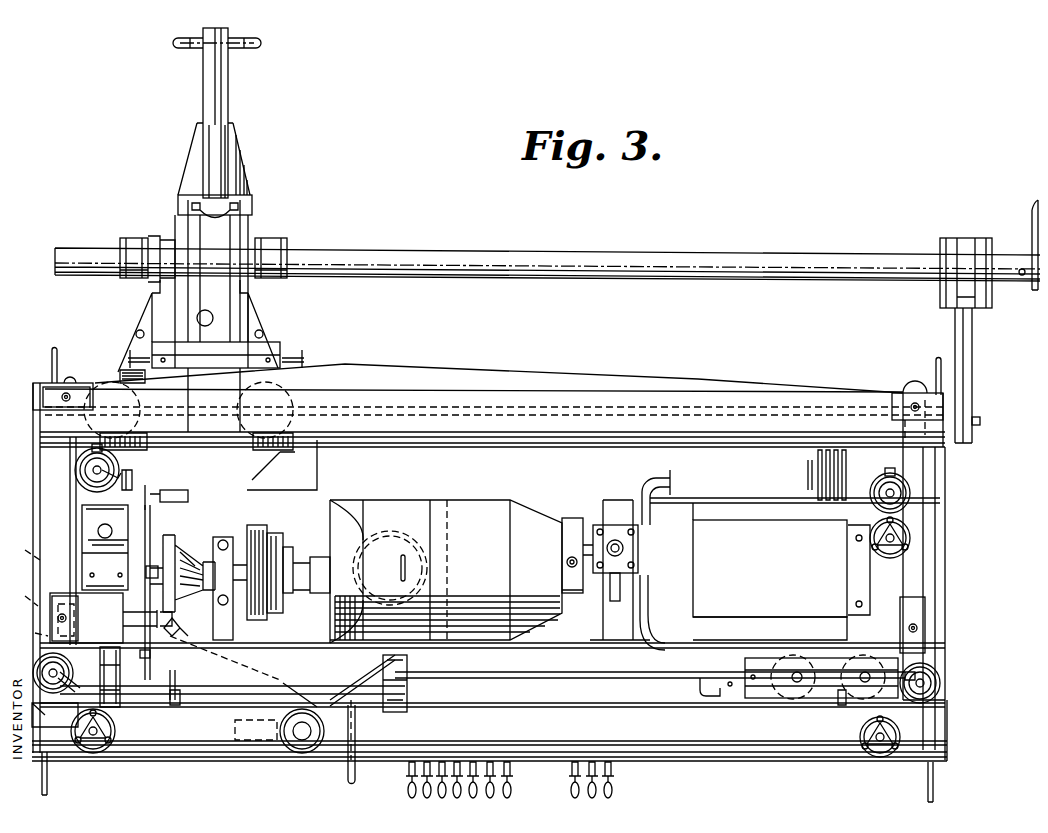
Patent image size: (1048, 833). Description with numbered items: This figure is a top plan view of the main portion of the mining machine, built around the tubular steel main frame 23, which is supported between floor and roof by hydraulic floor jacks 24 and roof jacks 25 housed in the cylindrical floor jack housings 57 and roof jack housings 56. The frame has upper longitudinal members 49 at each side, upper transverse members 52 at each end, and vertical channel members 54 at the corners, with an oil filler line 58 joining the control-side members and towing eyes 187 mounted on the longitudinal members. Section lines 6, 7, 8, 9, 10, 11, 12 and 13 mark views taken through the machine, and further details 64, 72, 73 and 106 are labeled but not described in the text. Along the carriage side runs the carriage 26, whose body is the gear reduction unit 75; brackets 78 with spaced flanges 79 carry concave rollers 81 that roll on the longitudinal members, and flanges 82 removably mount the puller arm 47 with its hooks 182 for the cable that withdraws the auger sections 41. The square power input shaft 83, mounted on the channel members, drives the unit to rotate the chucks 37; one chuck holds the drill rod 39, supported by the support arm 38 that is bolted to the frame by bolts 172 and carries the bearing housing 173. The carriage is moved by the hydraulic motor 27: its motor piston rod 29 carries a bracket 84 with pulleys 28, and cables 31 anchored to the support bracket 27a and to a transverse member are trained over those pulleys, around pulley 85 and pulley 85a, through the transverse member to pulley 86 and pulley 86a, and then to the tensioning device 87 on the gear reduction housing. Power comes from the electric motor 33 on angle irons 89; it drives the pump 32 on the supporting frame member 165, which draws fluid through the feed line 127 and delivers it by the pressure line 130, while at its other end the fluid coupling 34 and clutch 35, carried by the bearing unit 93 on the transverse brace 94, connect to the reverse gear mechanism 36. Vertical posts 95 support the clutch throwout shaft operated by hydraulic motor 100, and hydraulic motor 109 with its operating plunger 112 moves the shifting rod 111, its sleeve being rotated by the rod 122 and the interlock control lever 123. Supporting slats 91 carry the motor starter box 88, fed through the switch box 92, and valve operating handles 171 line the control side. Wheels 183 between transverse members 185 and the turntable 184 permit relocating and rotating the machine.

The section line 6- 6 is at (322, 270).
The section line 7- 7 is at (590, 800).
The section line 8- 8 is at (892, 440).
The section line 9- 9 is at (15, 455).
The view arrows 10 is at (900, 278).
The view arrow 11 is at (110, 510).
The view arrow 12 is at (120, 563).
The view arrow 13 is at (23, 615).
The tubular steel main frame 23 is at (952, 572).
The hydraulic floor jack 24 is at (75, 473).
The hydraulic roof jack 25 is at (90, 752).
The carriage 26 is at (267, 323).
The hydraulic motor 27 is at (220, 700).
The support bracket 27a is at (395, 712).
The pulleys 28 is at (855, 656).
The motor piston rod 29 is at (550, 678).
The cables 31 is at (716, 380).
The pump 32 is at (598, 585).
The electric motor 33 is at (476, 514).
The fluid coupling 34 is at (266, 532).
The clutch 35 is at (180, 640).
The reverse gear mechanism 36 is at (88, 556).
The chucks 37 is at (275, 240).
The support arm 38 is at (973, 379).
The drill rod 39 is at (612, 277).
The auger sections 41 is at (1032, 216).
The puller arm 47 is at (229, 118).
The upper longitudinal member 49 is at (704, 443).
The upper transverse member 52 is at (38, 644).
The vertical channel members 54 is at (960, 458).
The roof jack housings 56 is at (100, 752).
The floor jack housings 57 is at (75, 470).
The oil filler line 58 is at (307, 754).
The wheel bracket 64 is at (74, 464).
The wheel hub 72 is at (106, 726).
The wheel bolts 73 is at (80, 730).
The gear reduction unit 75 is at (246, 230).
The brackets 78 is at (278, 357).
The flanges 79 is at (328, 457).
The concave rollers 81 is at (122, 377).
The flanges 82 is at (213, 313).
The power input shaft 83 is at (436, 437).
The bracket 84 is at (758, 700).
The pulley 85 is at (27, 634).
The pulley 85a is at (935, 632).
The pulley 86 is at (58, 385).
The pulley 86a is at (925, 393).
The tensioning device 87 is at (216, 351).
The motor starter box 88 is at (780, 522).
The angle irons 89 is at (672, 508).
The supporting slats 91 is at (722, 497).
The switch box 92 is at (230, 750).
The bearing unit 93 is at (235, 628).
The transverse brace 94 is at (225, 650).
The vertical posts 95 is at (148, 658).
The hydraulic motor 100 is at (186, 492).
The bracket 106 is at (150, 580).
The hydraulic motor 109 is at (125, 618).
The shifting rod 111 is at (21, 550).
The operating plunger 112 is at (20, 596).
The rod 122 is at (320, 676).
The interlock control lever 123 is at (357, 775).
The feed line 127 is at (642, 628).
The pressure line 130 is at (614, 600).
The supporting frame member 165 is at (604, 503).
The operating handles 171 is at (490, 798).
The bolts 172 is at (981, 422).
The bearing housing 173 is at (962, 238).
The hooks 182 is at (258, 62).
The wheels 183 is at (828, 456).
The turntable 184 is at (433, 560).
The transverse members 185 is at (832, 495).
The towing eyes 187 is at (950, 776).